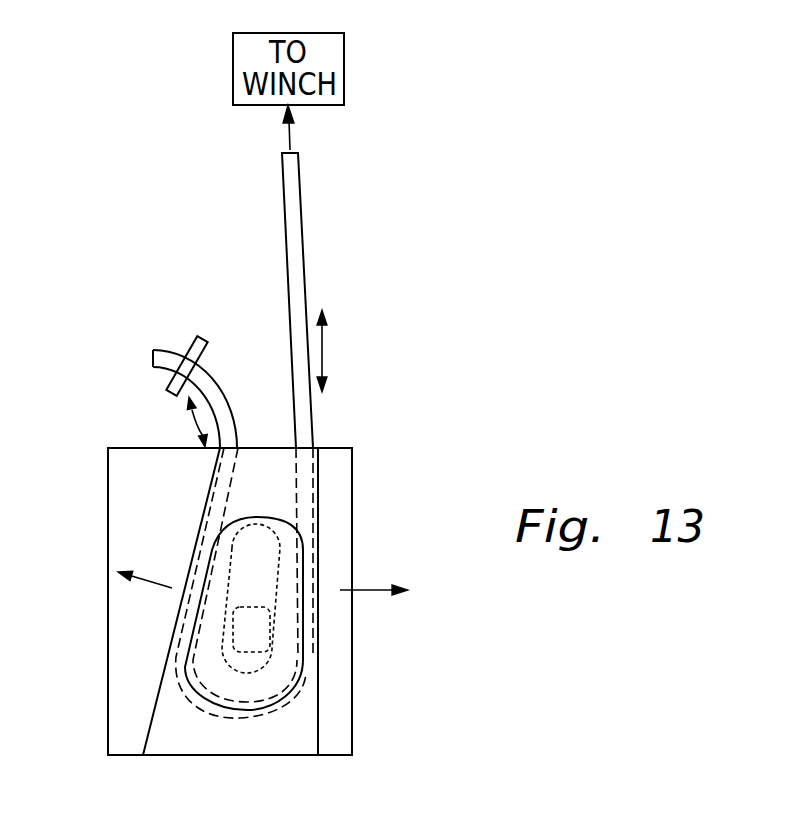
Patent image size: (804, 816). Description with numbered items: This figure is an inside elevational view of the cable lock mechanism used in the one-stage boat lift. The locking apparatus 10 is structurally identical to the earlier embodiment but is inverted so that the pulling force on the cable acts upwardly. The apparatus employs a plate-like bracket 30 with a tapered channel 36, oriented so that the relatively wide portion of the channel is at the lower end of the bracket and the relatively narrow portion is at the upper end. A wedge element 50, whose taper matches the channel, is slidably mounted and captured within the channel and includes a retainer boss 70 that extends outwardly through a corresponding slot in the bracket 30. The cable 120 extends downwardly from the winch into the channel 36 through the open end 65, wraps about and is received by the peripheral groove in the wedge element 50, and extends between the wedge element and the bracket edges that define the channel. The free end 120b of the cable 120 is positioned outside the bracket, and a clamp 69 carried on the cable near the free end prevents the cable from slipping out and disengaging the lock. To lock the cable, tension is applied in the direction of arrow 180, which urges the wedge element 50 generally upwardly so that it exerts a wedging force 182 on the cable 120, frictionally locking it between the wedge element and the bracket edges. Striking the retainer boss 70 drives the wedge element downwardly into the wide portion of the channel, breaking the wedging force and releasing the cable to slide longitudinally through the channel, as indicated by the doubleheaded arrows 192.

The locking apparatus 10 is at (108, 738).
The bracket 30 is at (355, 492).
The channel 36 is at (297, 735).
The wedge element 50 is at (318, 657).
The open end 65 is at (253, 448).
The clamp 69 is at (178, 335).
The retainer boss 70 is at (263, 627).
The cable 120 is at (303, 268).
The free end 120b is at (153, 357).
The arrow 180 is at (289, 137).
The wedging force 182 is at (365, 590).
The doubleheaded arrows 192 is at (325, 350).